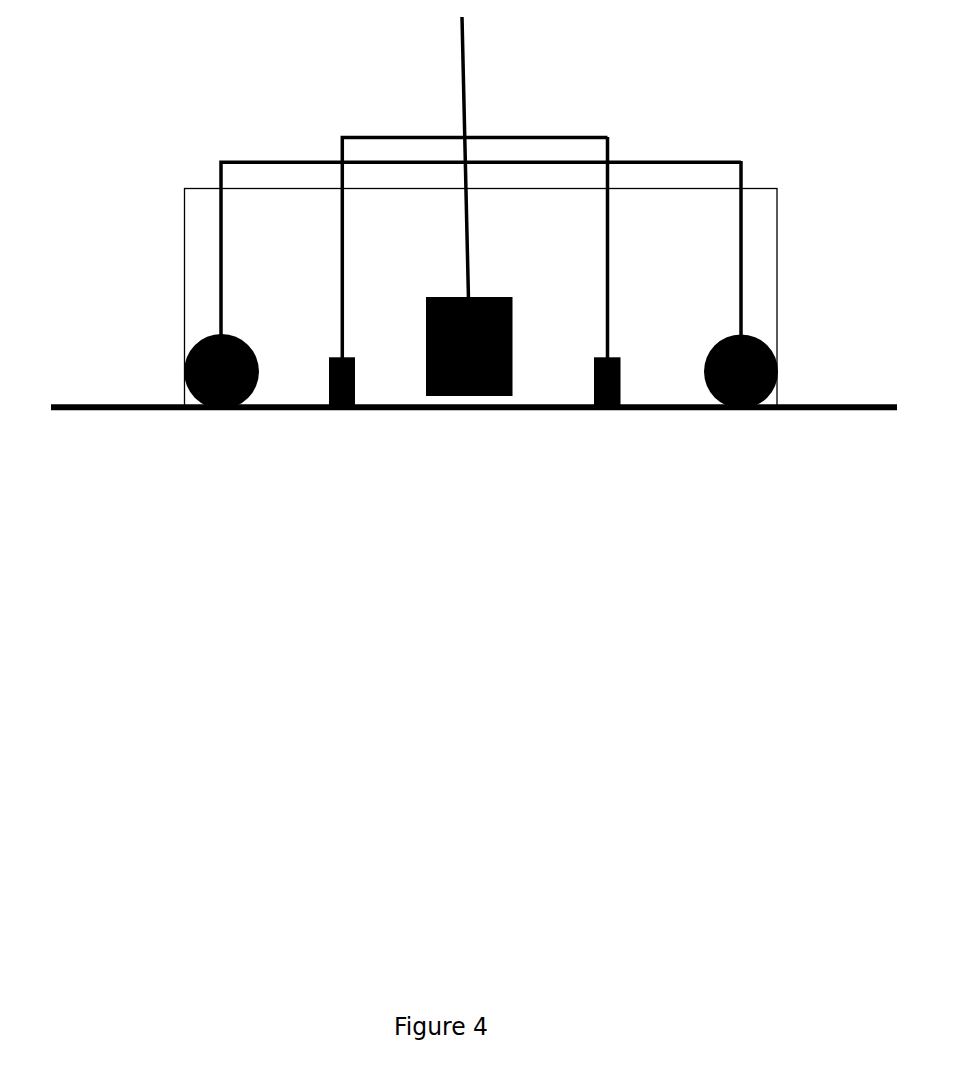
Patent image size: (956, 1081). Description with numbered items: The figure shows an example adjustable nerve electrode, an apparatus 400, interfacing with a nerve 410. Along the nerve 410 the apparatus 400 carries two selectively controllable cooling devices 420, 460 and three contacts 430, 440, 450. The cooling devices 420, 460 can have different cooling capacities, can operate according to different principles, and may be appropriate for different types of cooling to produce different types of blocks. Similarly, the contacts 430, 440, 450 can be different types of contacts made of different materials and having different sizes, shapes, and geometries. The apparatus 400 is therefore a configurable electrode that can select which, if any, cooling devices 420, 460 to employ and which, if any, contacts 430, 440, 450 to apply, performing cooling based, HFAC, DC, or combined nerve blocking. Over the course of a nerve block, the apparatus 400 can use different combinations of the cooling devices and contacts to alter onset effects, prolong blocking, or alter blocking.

The apparatus 400 is at (584, 186).
The nerve 410 is at (841, 402).
The selectively controllable cooling device 420 is at (219, 410).
The contact 430 is at (339, 410).
The contact 440 is at (472, 410).
The contact 450 is at (604, 410).
The selectively controllable cooling device 460 is at (740, 409).